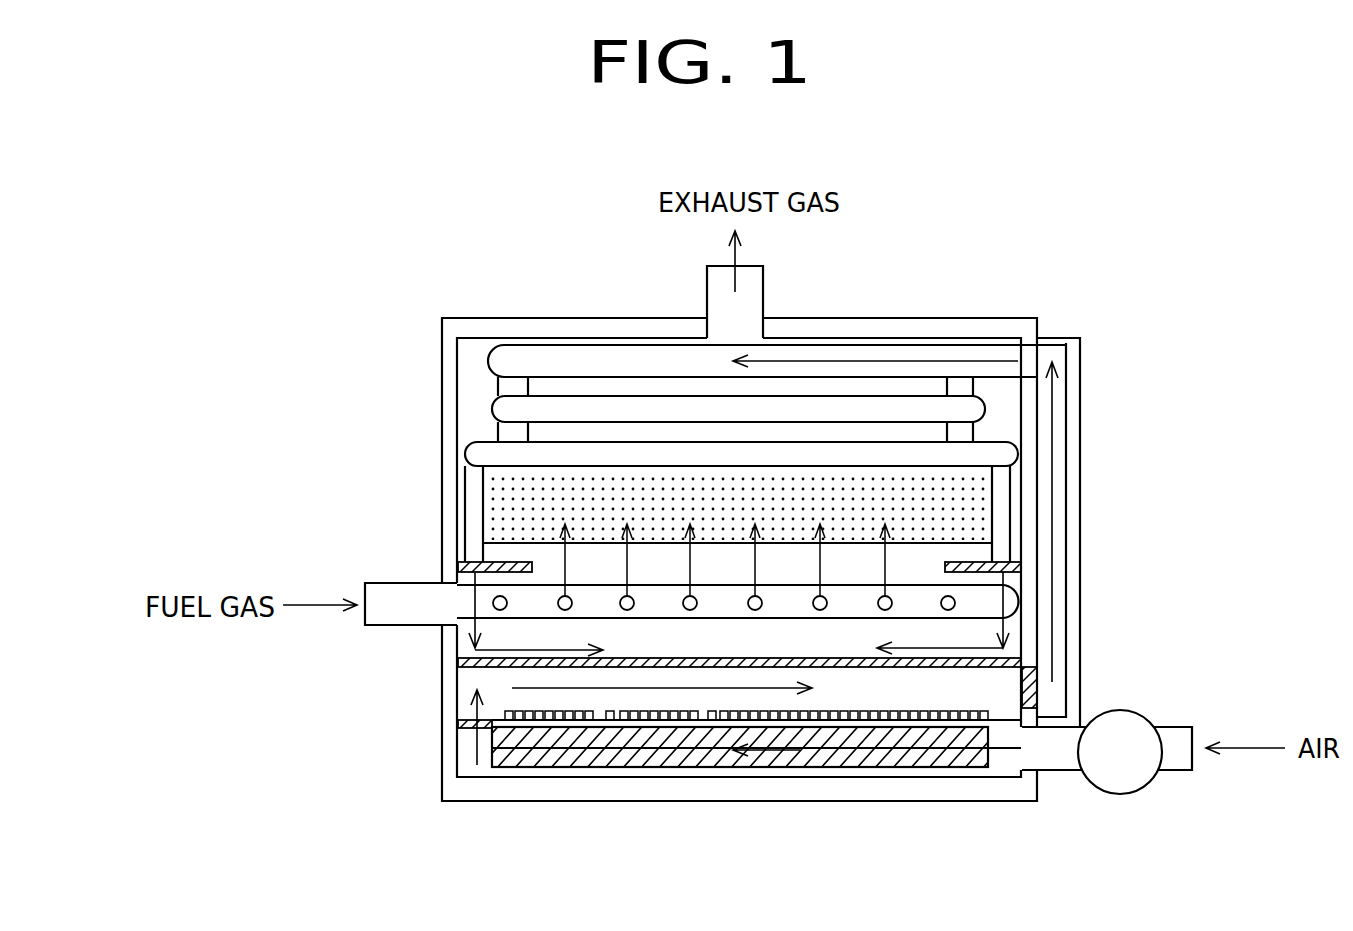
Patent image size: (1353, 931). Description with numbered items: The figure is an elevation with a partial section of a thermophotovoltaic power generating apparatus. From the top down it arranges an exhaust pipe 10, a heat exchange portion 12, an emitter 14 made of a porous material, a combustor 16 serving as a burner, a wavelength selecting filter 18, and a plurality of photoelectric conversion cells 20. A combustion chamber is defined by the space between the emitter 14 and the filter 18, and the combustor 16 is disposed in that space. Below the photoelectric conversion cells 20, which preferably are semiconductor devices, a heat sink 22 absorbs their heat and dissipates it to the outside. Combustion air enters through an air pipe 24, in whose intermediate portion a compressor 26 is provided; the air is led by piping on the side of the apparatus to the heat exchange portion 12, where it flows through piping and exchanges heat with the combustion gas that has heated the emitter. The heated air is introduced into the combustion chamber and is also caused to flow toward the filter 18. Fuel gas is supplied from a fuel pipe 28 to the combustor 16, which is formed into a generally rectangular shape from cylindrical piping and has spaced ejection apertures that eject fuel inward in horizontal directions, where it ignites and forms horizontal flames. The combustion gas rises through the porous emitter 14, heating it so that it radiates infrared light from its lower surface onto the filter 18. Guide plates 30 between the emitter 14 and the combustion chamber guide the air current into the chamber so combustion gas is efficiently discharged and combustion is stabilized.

The exhaust pipe 10 is at (748, 302).
The heat exchange portion 12 is at (963, 408).
The emitter 14 is at (970, 513).
The combustor 16 is at (1007, 600).
The wavelength selecting filter 18 is at (480, 670).
The photoelectric conversion cells 20 is at (525, 716).
The heat sink 22 is at (522, 762).
The air pipe 24 is at (1067, 752).
The compressor 26 is at (1120, 752).
The fuel pipe 28 is at (413, 605).
The guide plates 30 is at (498, 558).